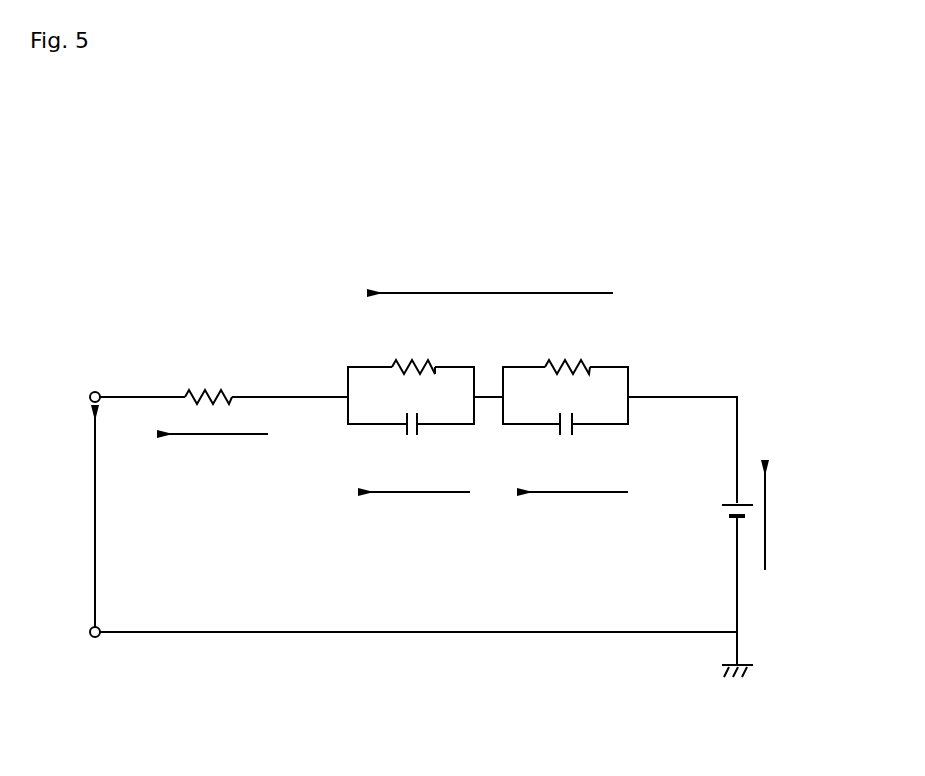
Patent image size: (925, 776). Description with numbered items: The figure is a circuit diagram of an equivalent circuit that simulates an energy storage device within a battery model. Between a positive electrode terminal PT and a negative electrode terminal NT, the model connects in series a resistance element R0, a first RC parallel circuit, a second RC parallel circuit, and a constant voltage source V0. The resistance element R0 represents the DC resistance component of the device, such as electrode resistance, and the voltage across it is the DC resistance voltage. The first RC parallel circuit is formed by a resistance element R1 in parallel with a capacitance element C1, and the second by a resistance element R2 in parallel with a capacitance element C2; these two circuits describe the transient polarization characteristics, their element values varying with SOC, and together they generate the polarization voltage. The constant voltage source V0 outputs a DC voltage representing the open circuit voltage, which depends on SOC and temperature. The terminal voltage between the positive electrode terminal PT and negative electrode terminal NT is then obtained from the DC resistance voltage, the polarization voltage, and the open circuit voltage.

The positive electrode terminal PT is at (69, 397).
The negative electrode terminal NT is at (69, 633).
The resistance element R0 is at (208, 379).
The resistance element R1 is at (414, 347).
The resistance element R2 is at (567, 347).
The capacitance element C1 is at (414, 446).
The capacitance element C2 is at (564, 446).
The constant voltage source V0 is at (714, 512).